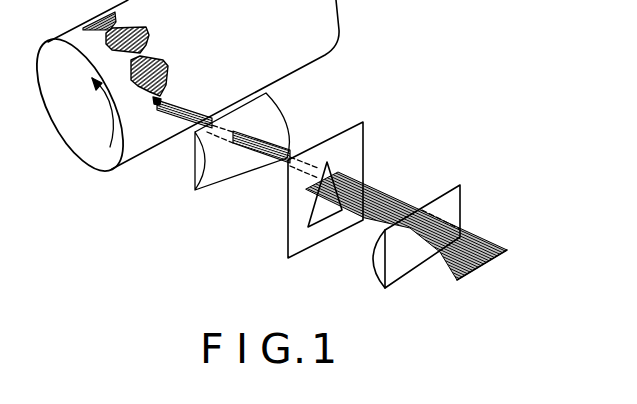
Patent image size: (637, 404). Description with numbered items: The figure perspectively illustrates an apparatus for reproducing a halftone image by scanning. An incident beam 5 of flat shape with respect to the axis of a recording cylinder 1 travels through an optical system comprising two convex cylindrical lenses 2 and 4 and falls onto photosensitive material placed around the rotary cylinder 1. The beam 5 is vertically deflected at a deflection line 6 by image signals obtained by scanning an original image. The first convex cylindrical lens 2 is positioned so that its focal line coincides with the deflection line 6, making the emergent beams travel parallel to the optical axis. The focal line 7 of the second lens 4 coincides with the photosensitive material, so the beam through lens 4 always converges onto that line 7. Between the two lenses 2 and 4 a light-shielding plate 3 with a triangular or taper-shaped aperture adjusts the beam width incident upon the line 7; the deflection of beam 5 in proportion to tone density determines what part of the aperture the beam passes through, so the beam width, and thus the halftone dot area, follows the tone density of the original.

The recording cylinder 1 is at (133, 147).
The first convex cylindrical lens 2 is at (378, 275).
The light-shielding plate 3 is at (320, 222).
The second convex cylindrical lens 4 is at (210, 184).
The incident beam 5 is at (472, 239).
The deflection line 6 is at (497, 254).
The focal line of the second lens 7 is at (155, 110).